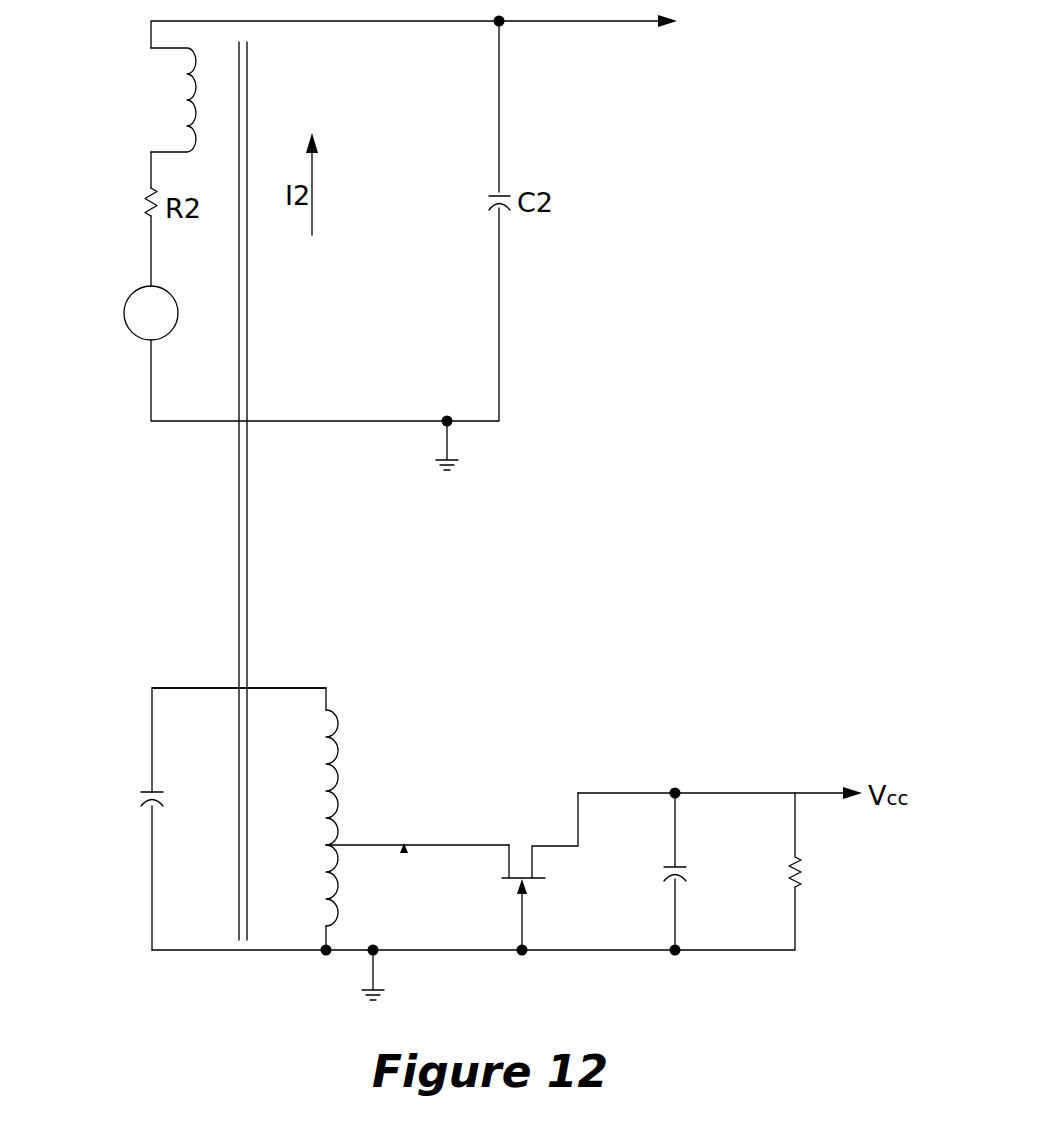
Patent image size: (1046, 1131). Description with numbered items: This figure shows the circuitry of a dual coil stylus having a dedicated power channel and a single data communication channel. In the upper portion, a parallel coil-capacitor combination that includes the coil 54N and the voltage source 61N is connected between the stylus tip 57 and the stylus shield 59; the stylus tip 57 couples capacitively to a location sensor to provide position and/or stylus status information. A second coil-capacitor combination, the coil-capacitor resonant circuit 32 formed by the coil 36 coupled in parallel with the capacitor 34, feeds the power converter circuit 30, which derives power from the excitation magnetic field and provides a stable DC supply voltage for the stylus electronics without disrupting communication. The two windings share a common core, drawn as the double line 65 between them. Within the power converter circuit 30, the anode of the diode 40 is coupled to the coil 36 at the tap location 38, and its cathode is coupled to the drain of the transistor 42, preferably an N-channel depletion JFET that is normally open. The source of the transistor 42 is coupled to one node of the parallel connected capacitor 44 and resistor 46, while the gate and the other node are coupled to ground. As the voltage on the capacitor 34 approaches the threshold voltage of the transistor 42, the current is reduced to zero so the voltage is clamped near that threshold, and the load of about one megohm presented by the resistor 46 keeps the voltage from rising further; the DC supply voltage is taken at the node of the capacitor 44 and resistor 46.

The power converter circuit 30 is at (595, 699).
The coil-capacitor resonant circuit 32 is at (293, 688).
The capacitor 34 is at (149, 790).
The coil 36 is at (340, 752).
The tap location 38 is at (314, 843).
The diode 40 is at (404, 850).
The transistor 42 is at (503, 881).
The capacitor 44 is at (672, 862).
The resistor 46 is at (803, 866).
The coil 54N is at (190, 114).
The stylus tip 57 is at (606, 21).
The stylus shield 59 is at (450, 460).
The voltage source 61N is at (124, 313).
The transformer core 65 is at (240, 548).